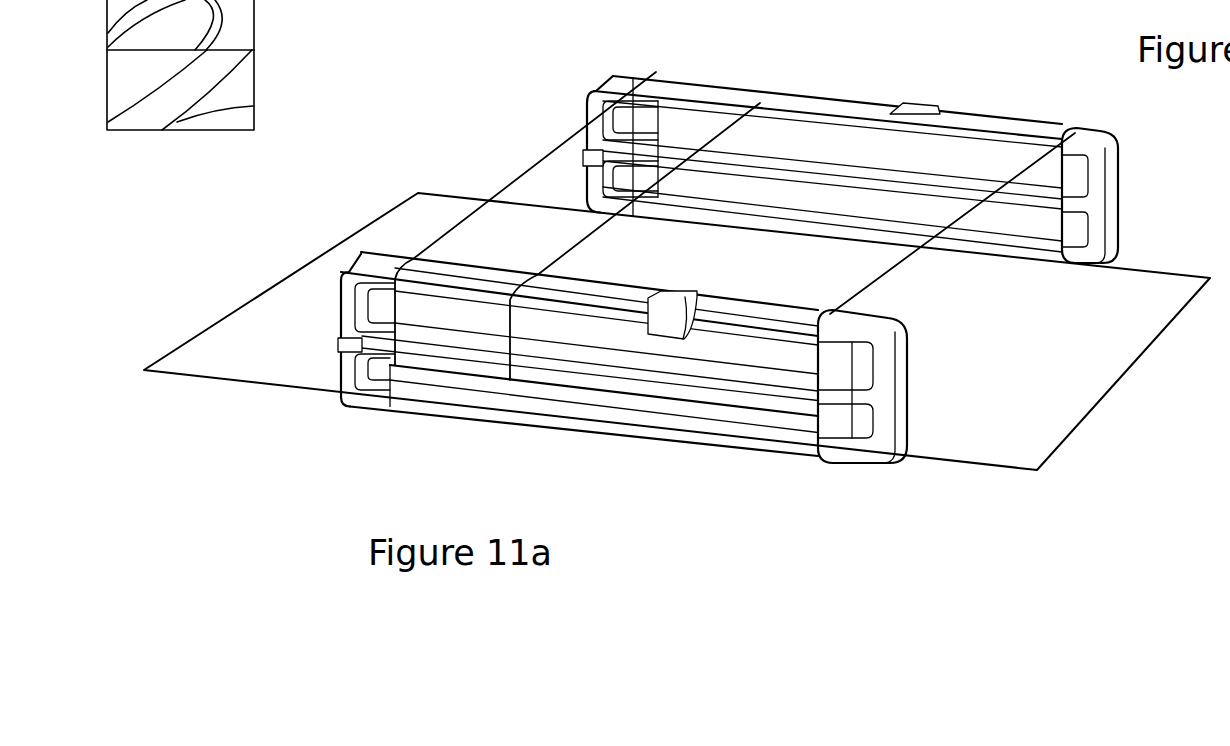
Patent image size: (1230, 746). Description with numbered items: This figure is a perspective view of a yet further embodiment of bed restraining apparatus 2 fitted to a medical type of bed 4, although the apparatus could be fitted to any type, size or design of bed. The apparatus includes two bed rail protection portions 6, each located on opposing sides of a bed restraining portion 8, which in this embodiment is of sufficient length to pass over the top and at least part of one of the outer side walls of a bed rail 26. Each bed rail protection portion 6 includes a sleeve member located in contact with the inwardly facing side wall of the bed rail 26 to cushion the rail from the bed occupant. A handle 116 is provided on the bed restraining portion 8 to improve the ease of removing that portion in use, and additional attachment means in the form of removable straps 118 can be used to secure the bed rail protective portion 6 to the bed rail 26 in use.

The bed restraining apparatus 2 is at (981, 105).
The bed 4 is at (1053, 413).
The bed rail protection portion 6 is at (792, 428).
The bed restraining portion 8 is at (557, 167).
The bed rail 26 is at (885, 411).
The handle 116 is at (918, 107).
The removable strap 118 is at (350, 345).